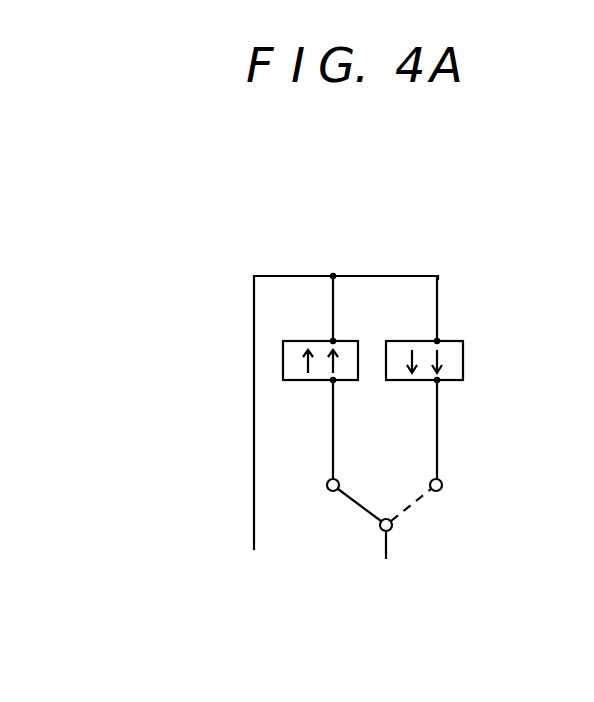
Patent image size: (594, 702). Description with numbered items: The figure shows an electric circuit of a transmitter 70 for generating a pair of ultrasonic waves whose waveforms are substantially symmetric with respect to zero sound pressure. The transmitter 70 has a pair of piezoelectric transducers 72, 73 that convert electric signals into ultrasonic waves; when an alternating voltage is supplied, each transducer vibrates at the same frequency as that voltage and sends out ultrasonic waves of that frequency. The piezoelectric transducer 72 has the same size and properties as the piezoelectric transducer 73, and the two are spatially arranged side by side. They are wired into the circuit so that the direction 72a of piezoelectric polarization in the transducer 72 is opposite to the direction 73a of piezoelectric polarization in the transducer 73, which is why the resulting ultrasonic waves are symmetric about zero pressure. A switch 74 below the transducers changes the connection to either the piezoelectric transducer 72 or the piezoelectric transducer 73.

The transmitter 70 is at (238, 353).
The piezoelectric transducer 72 is at (296, 346).
The direction of piezoelectric polarization 72a is at (337, 364).
The piezoelectric transducer 73 is at (456, 350).
The direction of piezoelectric polarization 73a is at (438, 357).
The switch 74 is at (356, 507).